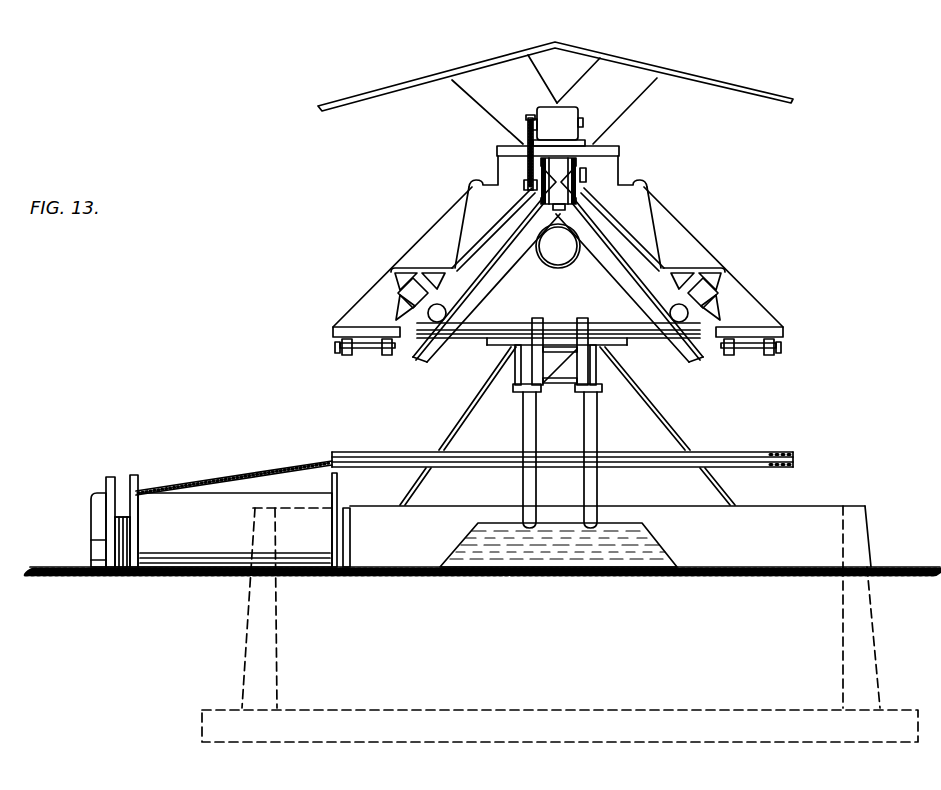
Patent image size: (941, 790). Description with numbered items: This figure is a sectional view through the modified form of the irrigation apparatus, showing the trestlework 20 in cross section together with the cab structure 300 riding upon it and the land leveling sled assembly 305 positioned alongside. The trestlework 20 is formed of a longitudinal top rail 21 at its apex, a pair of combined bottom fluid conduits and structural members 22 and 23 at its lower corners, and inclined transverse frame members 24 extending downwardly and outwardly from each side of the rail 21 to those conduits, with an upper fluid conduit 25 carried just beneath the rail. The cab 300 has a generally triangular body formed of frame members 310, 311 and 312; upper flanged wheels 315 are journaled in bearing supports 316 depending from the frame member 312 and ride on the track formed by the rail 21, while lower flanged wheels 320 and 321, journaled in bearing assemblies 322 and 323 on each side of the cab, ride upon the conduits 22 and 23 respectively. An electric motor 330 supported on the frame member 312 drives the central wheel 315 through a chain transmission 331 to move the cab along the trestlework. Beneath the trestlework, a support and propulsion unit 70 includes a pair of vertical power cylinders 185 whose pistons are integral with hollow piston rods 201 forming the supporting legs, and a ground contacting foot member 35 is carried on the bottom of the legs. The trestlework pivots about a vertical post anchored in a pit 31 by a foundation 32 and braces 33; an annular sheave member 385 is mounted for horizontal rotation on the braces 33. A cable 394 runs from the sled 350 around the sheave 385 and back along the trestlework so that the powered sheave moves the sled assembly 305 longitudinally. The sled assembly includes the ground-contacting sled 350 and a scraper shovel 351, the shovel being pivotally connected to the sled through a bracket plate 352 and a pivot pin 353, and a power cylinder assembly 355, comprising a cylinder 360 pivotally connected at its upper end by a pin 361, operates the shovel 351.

The cab structure 300 is at (688, 72).
The frame member 311 is at (641, 96).
The electric motor 330 is at (550, 104).
The bearing supports 316 is at (588, 157).
The frame member 312 is at (498, 142).
The chain transmission 331 is at (528, 158).
The upper flanged wheels 315 is at (541, 178).
The top rail 21 is at (574, 214).
The frame member 310 is at (480, 245).
The bearing assembly 322 is at (402, 281).
The lower flanged wheels 320 is at (405, 294).
The bearing assembly 323 is at (715, 280).
The lower flanged wheels 321 is at (707, 296).
The combined bottom fluid conduit and structural member 23 is at (669, 314).
The trestlework 20 is at (545, 296).
The inclined transverse frame members 24 is at (500, 275).
The upper fluid conduit 25 is at (560, 268).
The combined bottom fluid conduit and structural member 22 is at (416, 334).
The trestlework support and propulsion unit 70 is at (522, 427).
The hollow piston rods 201 is at (585, 405).
The vertical power cylinders 185 is at (520, 356).
The braces 33 is at (470, 414).
The annular sheave member 385 is at (760, 451).
The cable 394 is at (276, 469).
The pit 31 is at (876, 536).
The foundation 32 is at (878, 630).
The foot member 35 is at (655, 547).
The scraper shovel 351 is at (318, 545).
The land leveling sled assembly 305 is at (112, 500).
The cylinder 360 is at (99, 500).
The pin 361 is at (130, 476).
The sled 350 is at (129, 539).
The power cylinder assembly 355 is at (96, 538).
The bracket plate 352 is at (104, 553).
The pivot pin 353 is at (131, 517).